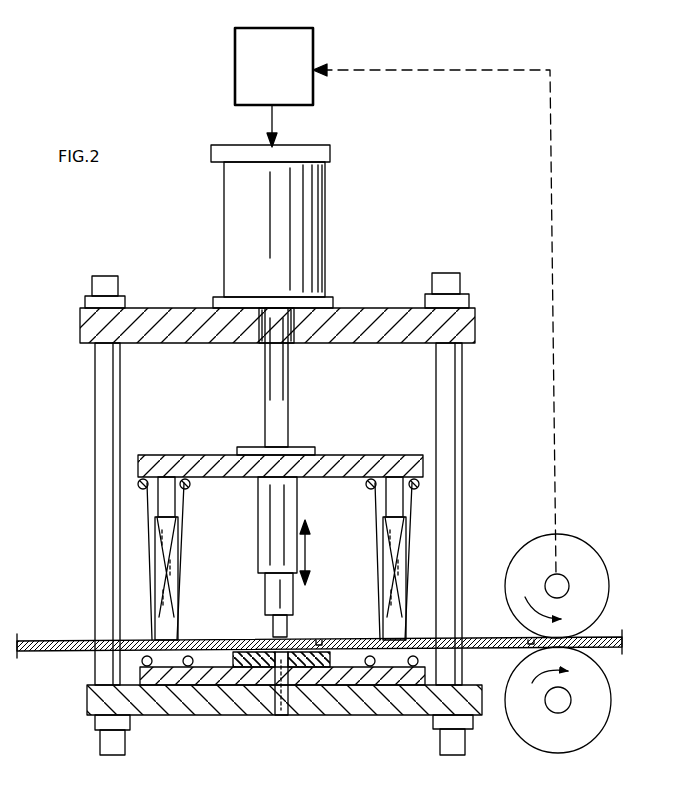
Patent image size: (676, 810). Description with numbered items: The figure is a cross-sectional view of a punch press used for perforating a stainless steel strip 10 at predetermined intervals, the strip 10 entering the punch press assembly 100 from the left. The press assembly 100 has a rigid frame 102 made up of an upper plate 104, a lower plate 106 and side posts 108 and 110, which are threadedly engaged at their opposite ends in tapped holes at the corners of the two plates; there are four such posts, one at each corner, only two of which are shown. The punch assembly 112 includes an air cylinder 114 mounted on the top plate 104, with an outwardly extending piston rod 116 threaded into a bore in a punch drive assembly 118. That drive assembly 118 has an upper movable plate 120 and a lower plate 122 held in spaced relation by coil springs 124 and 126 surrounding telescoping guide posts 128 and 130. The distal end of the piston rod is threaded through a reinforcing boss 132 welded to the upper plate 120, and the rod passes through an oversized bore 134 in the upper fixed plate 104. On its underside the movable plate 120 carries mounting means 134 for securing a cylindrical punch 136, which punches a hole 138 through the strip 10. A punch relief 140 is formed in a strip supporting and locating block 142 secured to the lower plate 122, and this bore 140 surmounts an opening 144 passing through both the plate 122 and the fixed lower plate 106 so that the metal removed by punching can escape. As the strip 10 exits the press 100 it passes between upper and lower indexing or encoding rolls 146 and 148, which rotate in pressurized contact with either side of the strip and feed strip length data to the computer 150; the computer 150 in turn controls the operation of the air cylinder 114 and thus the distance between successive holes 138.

The strip 10 is at (56, 640).
The punch press assembly 100 is at (371, 287).
The rigid frame 102 is at (465, 448).
The upper plate 104 is at (357, 343).
The lower plate 106 is at (365, 705).
The side post 108 is at (453, 530).
The side post 110 is at (112, 446).
The punch assembly 112 is at (292, 404).
The air cylinder 114 is at (310, 225).
The piston rod 116 is at (264, 388).
The punch drive assembly 118 is at (367, 527).
The upper plate 120 is at (343, 472).
The lower plate 122 is at (353, 705).
The coil spring 124 is at (190, 489).
The coil spring 126 is at (371, 489).
The telescoping guide post 128 is at (168, 626).
The telescoping guide post 130 is at (388, 590).
The reinforcing boss 132 is at (252, 452).
The oversized bore / mounting means 134 is at (292, 330).
The punch 136 is at (274, 626).
The hole 138 is at (319, 644).
The punch relief 140 is at (270, 672).
The strip supporting and locating block 142 is at (246, 688).
The opening 144 is at (283, 705).
The upper indexing roll 146 is at (588, 572).
The lower indexing roll 148 is at (586, 710).
The computer 150 is at (290, 70).